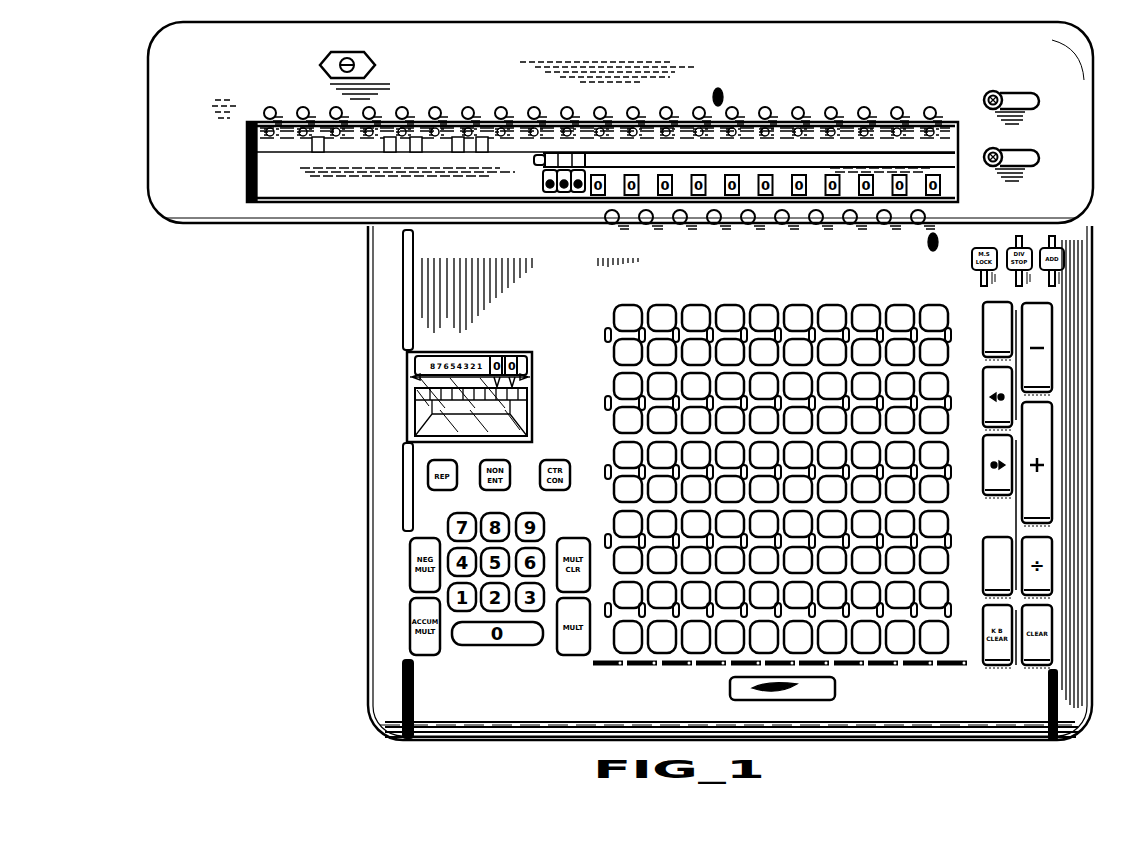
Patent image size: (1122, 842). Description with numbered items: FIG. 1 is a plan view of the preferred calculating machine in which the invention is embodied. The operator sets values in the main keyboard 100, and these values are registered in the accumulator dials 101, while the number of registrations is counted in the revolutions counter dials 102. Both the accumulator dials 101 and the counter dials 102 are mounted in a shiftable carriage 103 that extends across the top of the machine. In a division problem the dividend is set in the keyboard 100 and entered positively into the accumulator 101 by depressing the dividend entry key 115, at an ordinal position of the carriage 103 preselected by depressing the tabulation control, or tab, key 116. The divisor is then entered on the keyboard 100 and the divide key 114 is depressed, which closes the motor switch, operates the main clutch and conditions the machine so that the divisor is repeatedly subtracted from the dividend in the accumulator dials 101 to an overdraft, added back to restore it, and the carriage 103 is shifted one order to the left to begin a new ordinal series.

The main keyboard 100 is at (711, 290).
The accumulator dials 101 is at (797, 121).
The revolutions counter dials 102 is at (598, 194).
The shiftable carriage 103 is at (479, 73).
The divide key 114 is at (993, 541).
The dividend entry key 115 is at (982, 313).
The tabulation control key 116 is at (818, 226).